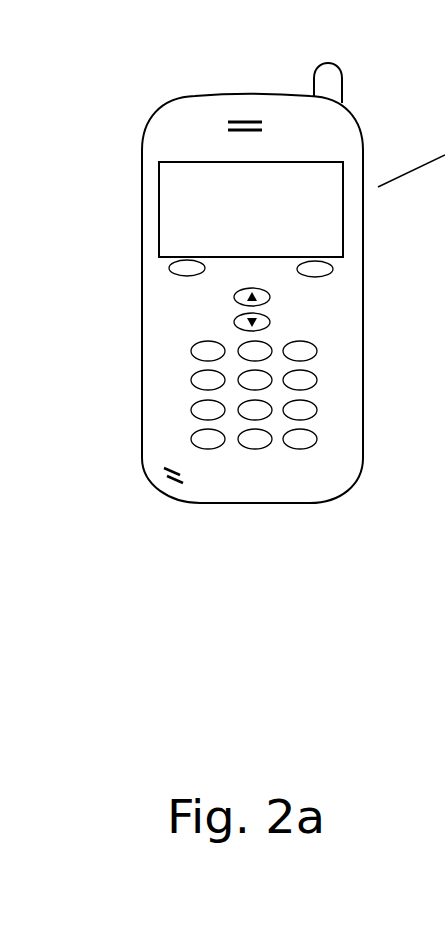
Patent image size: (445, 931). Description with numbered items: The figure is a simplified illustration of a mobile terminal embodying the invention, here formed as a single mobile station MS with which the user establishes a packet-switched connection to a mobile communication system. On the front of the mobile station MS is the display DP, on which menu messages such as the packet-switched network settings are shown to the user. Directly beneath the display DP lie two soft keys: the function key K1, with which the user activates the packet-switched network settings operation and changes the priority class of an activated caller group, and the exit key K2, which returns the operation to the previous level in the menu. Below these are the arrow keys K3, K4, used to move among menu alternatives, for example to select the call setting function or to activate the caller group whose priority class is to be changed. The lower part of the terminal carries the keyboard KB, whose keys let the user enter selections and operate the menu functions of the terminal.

The mobile station MS is at (143, 353).
The display DP is at (176, 205).
The function key K1 is at (169, 268).
The exit key K2 is at (333, 269).
The arrow key K3 is at (270, 297).
The arrow key K4 is at (270, 322).
The keyboard KB is at (160, 400).